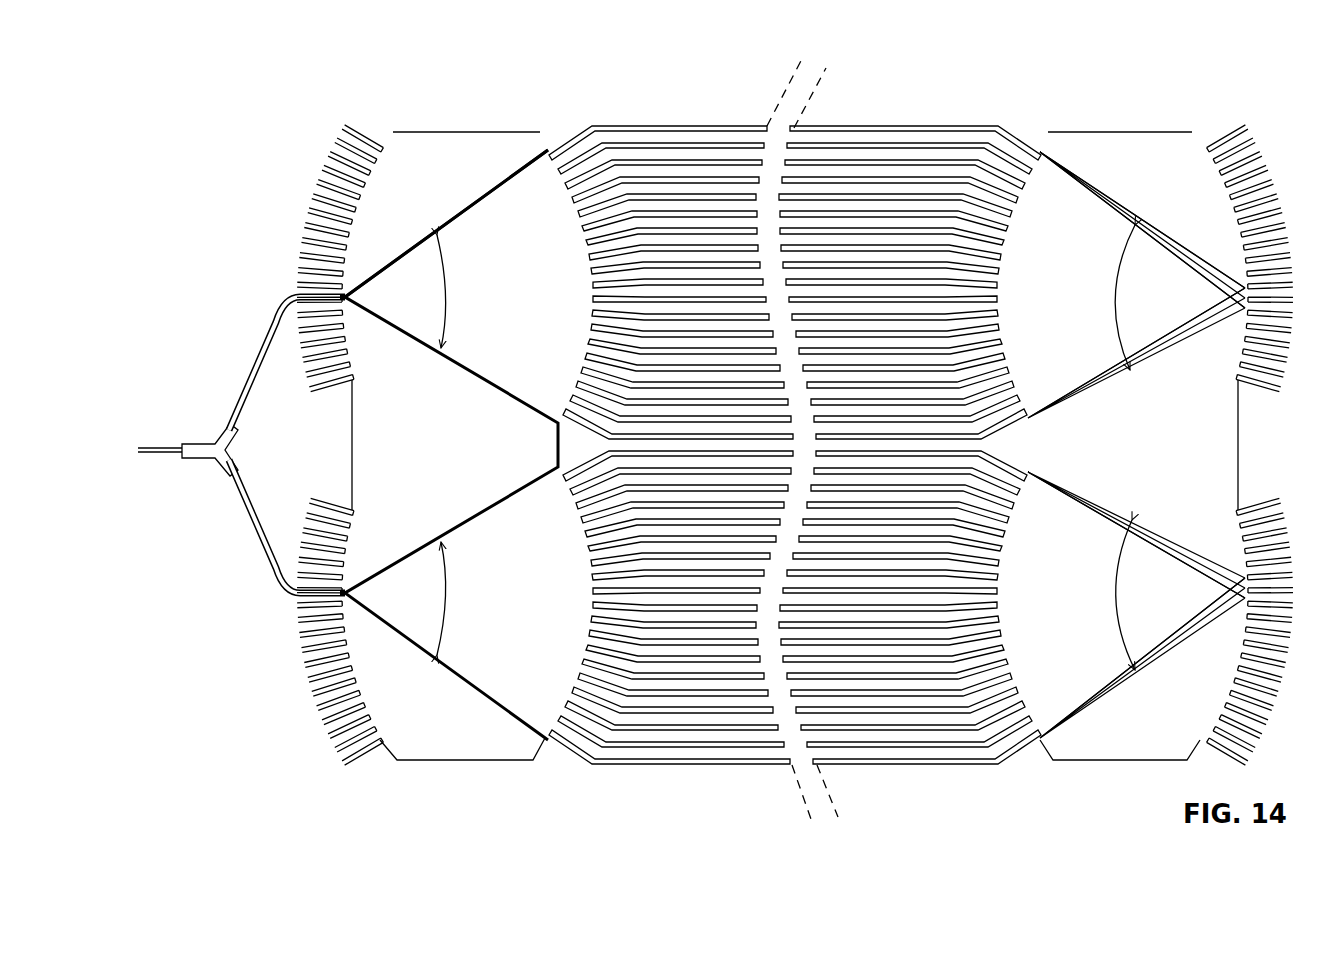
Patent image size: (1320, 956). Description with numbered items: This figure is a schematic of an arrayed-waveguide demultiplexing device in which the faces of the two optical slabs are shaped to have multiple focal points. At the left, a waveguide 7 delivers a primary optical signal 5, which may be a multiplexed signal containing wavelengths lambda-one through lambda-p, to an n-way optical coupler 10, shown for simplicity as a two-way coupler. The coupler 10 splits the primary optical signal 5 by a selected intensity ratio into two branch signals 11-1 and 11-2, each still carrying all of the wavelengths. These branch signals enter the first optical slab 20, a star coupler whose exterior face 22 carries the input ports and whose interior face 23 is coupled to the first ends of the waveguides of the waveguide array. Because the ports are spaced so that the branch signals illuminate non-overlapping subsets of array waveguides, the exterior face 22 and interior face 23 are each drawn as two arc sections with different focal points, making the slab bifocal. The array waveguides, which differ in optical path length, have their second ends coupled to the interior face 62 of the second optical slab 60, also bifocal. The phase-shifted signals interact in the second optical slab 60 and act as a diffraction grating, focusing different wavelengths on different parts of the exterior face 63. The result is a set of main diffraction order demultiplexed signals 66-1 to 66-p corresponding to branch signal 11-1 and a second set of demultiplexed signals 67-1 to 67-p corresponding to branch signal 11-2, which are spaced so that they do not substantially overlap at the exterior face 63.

The primary optical signal 5 is at (136, 439).
The waveguide 7 is at (140, 452).
The n-way optical coupler 10 is at (191, 460).
The branch signal 11-1 is at (237, 385).
The branch signal 11-2 is at (237, 525).
The first optical slab 20 is at (495, 768).
The exterior face 22 is at (401, 141).
The interior face 23 is at (545, 141).
The second optical slab 60 is at (1097, 770).
The interior face 62 is at (1046, 141).
The exterior face 63 is at (1197, 142).
The main diffraction order demultiplexed signal 66-1 is at (1136, 285).
The main diffraction order demultiplexed signal 66-p is at (1136, 285).
The demultiplexed signal 67-1 is at (1136, 605).
The demultiplexed signal 67-p is at (1136, 605).